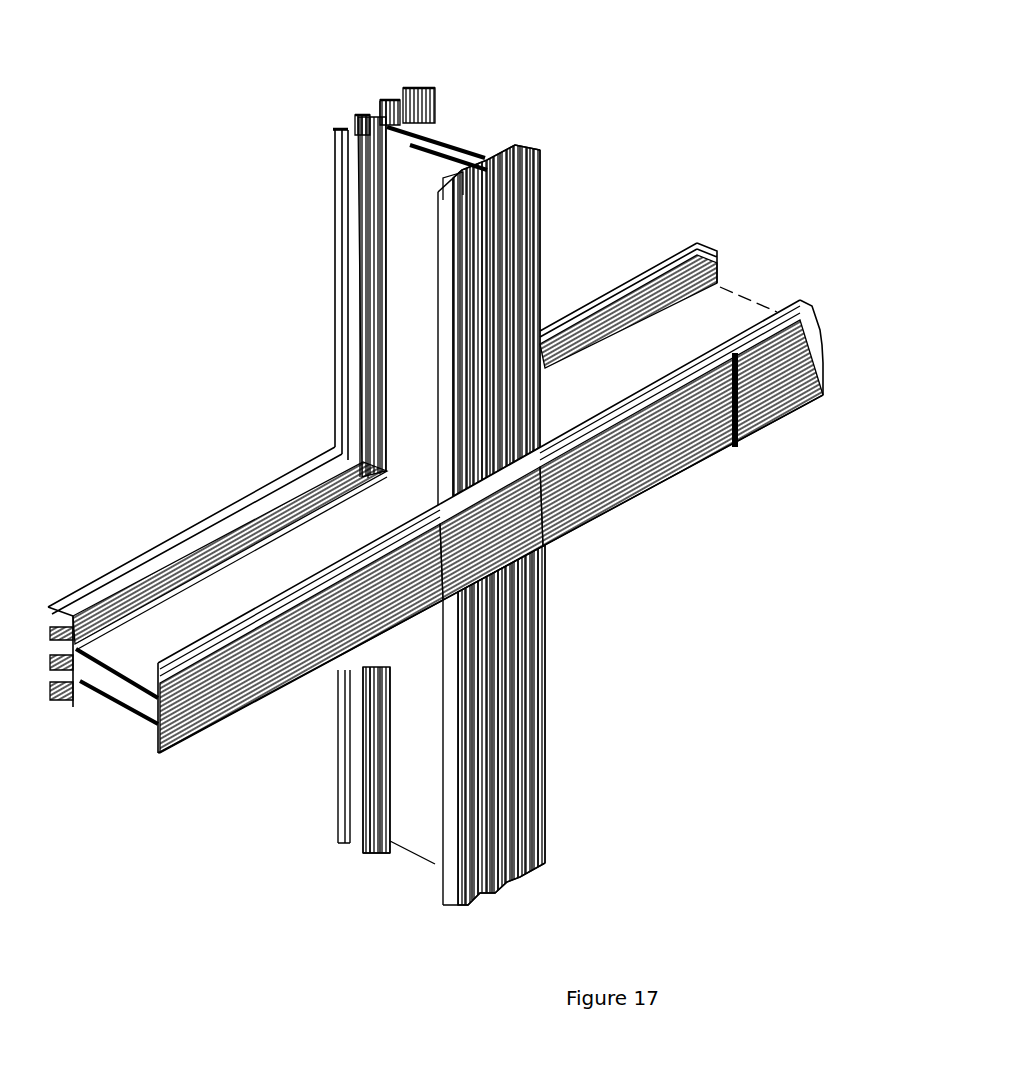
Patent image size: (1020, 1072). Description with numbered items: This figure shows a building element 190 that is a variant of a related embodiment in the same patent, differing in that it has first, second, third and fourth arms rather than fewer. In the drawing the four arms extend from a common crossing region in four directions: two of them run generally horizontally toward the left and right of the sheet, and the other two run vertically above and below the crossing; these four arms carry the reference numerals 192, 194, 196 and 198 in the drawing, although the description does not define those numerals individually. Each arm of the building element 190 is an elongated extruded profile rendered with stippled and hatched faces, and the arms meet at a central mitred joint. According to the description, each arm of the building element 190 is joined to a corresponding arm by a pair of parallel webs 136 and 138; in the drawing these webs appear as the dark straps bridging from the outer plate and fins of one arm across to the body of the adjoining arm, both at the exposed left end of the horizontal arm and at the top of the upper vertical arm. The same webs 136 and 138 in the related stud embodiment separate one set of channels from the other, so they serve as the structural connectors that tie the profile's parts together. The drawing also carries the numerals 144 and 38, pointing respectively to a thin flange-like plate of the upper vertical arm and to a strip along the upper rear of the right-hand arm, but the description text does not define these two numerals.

The building element 190 is at (250, 323).
The first horizontal member 192 is at (232, 505).
The upper vertical member 194 is at (382, 296).
The lower vertical member 196 is at (330, 763).
The second horizontal member 198 is at (643, 497).
The web 136 is at (400, 185).
The web 138 is at (437, 142).
The flange 144 is at (337, 233).
The strip 38 is at (600, 368).